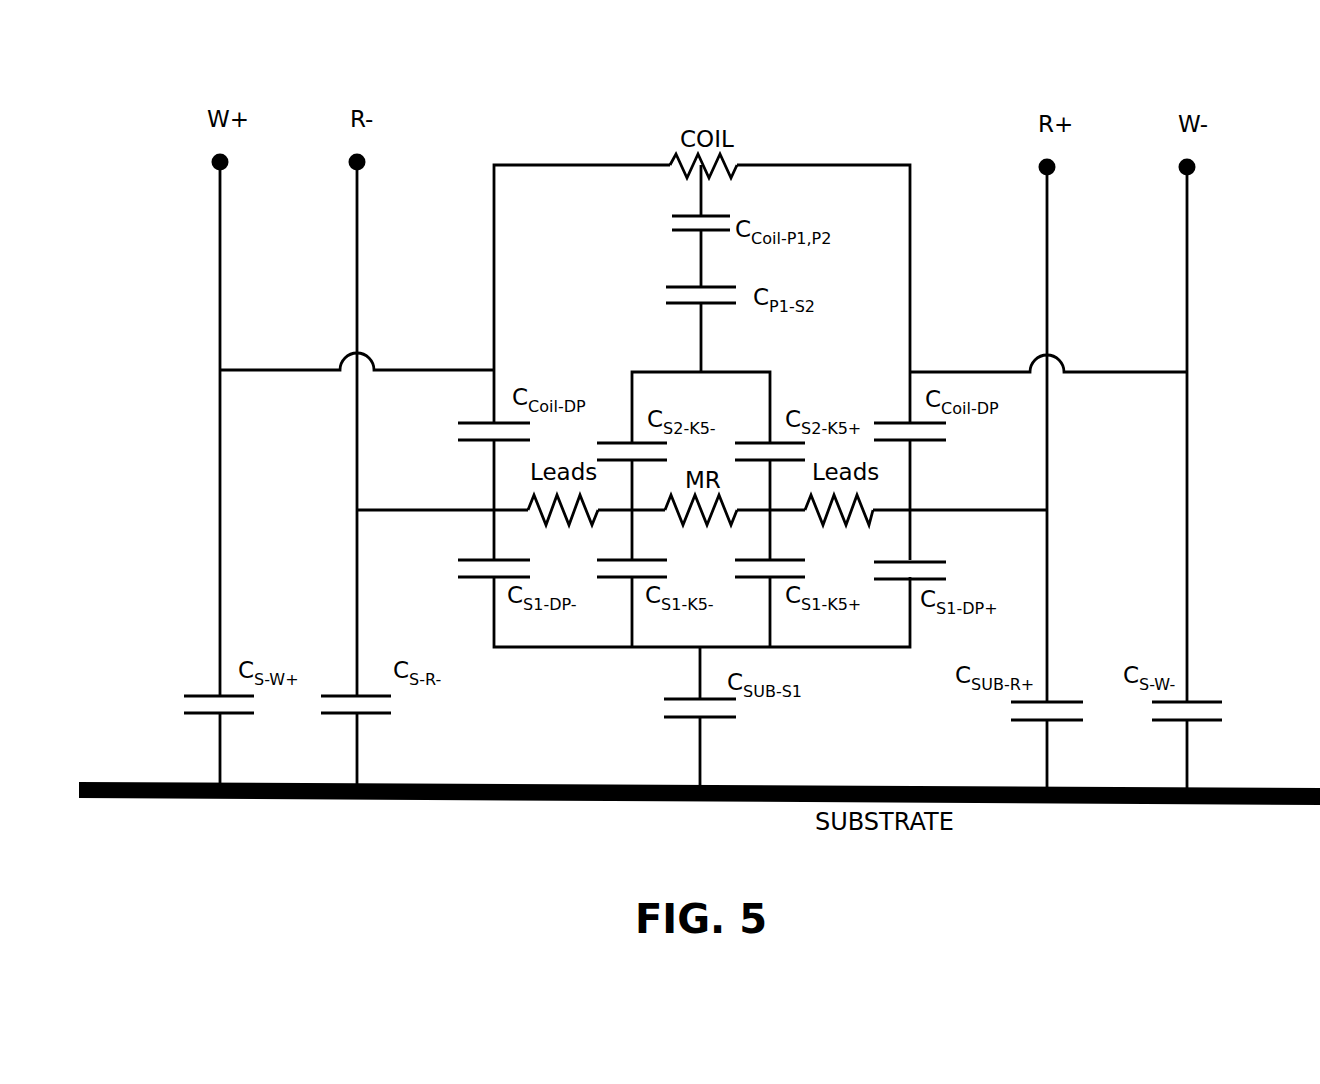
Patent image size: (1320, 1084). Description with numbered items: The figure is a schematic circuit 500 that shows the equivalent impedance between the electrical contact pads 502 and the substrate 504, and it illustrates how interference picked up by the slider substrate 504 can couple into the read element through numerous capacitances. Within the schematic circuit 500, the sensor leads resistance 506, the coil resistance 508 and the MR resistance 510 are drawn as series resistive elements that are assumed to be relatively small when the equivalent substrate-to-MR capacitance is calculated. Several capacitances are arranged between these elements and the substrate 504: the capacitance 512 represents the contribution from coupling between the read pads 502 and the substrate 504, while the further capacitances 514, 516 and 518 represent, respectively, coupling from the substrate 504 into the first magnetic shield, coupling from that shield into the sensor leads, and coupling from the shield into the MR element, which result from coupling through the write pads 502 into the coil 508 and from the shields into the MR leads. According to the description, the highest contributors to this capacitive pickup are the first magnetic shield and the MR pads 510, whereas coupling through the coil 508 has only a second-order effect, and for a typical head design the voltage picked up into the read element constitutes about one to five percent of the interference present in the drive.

The schematic circuit 500 is at (437, 163).
The electrical contact pads 502 is at (212, 162).
The substrate 504 is at (497, 798).
The sensor leads resistance 506 is at (528, 500).
The coil resistance 508 is at (668, 157).
The MR resistance 510 is at (692, 515).
The capacitance 512 is at (1008, 712).
The capacitance 514 is at (660, 710).
The capacitance 516 is at (662, 572).
The capacitance 518 is at (458, 568).